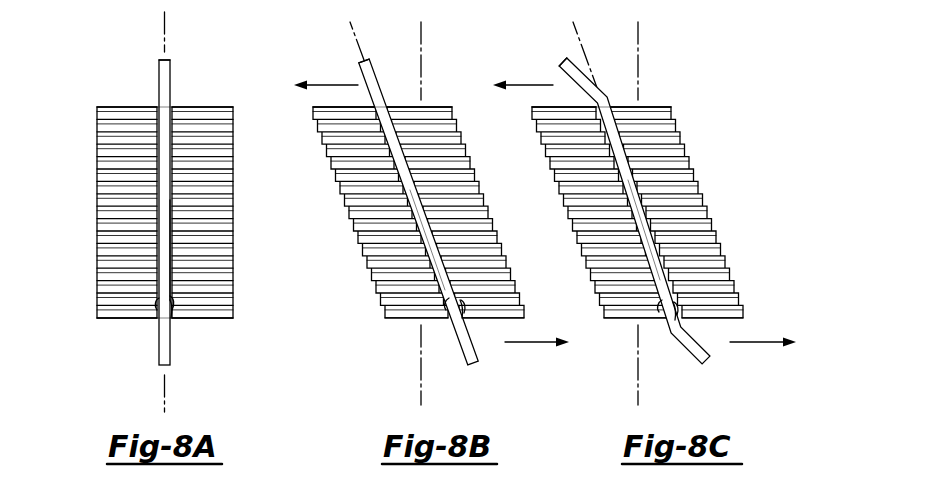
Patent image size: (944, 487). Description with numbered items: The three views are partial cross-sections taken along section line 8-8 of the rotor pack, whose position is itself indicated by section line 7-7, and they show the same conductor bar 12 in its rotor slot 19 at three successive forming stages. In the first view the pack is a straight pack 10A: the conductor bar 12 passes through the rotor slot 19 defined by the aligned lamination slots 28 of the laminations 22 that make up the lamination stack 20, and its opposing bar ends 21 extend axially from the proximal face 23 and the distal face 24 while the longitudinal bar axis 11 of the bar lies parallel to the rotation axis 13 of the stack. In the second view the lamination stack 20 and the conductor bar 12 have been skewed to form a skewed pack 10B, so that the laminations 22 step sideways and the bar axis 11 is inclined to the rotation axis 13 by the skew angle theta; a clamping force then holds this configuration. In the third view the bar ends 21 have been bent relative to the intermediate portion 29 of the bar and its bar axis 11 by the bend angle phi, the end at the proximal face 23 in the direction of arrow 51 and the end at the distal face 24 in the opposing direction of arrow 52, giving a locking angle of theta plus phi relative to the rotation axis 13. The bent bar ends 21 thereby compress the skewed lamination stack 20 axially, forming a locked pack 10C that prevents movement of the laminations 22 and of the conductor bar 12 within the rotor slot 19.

In FIG. 8A, the section line 7- 7 is at (70, 220).
In FIG. 8A, the section line 8- 8 is at (50, 24).
In FIG. 8A, the straight pack 10A is at (76, 133).
In FIG. 8B, the skewed pack 10B is at (346, 261).
In FIG. 8C, the locked pack 10C is at (747, 197).
In FIG. 8A, the longitudinal bar axis 11 is at (168, 25).
In FIG. 8B, the longitudinal bar axis 11 is at (349, 27).
In FIG. 8C, the longitudinal bar axis 11 is at (578, 28).
In FIG. 8A, the conductor bar 12 is at (150, 92).
In FIG. 8B, the conductor bar 12 is at (346, 59).
In FIG. 8C, the conductor bar 12 is at (547, 53).
In FIG. 8B, the rotation axis 13 is at (422, 55).
In FIG. 8C, the rotation axis 13 is at (639, 55).
In FIG. 8A, the rotor slot 19 is at (171, 318).
In FIG. 8B, the rotor slot 19 is at (441, 319).
In FIG. 8C, the rotor slot 19 is at (668, 322).
In FIG. 8A, the lamination stack 20 is at (78, 268).
In FIG. 8A, the bar end 21 is at (171, 87).
In FIG. 8B, the bar end 21 is at (383, 99).
In FIG. 8C, the bar end 21 is at (599, 92).
In FIG. 8A, the lamination 22 is at (236, 297).
In FIG. 8B, the lamination 22 is at (354, 223).
In FIG. 8C, the lamination 22 is at (689, 163).
In FIG. 8A, the proximal face 23 is at (106, 107).
In FIG. 8B, the proximal face 23 is at (320, 107).
In FIG. 8C, the proximal face 23 is at (658, 107).
In FIG. 8A, the distal face 24 is at (118, 320).
In FIG. 8B, the distal face 24 is at (402, 322).
In FIG. 8C, the distal face 24 is at (602, 322).
In FIG. 8A, the lamination slot 28 is at (159, 314).
In FIG. 8B, the lamination slot 28 is at (462, 314).
In FIG. 8C, the lamination slot 28 is at (654, 314).
In FIG. 8A, the intermediate portion 29 is at (172, 263).
In FIG. 8B, the intermediate portion 29 is at (422, 207).
In FIG. 8C, the intermediate portion 29 is at (622, 204).
In FIG. 8B, the arrow 51 is at (337, 85).
In FIG. 8C, the arrow 51 is at (524, 85).
In FIG. 8B, the arrow 52 is at (527, 344).
In FIG. 8C, the arrow 52 is at (761, 341).